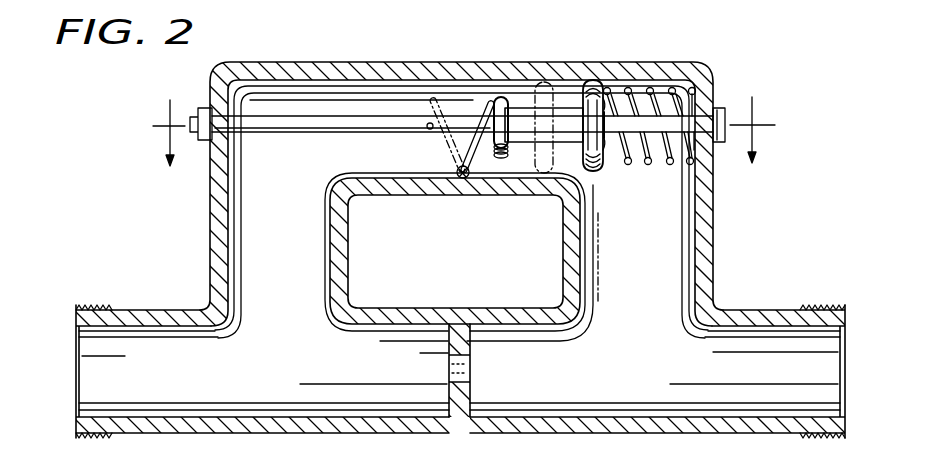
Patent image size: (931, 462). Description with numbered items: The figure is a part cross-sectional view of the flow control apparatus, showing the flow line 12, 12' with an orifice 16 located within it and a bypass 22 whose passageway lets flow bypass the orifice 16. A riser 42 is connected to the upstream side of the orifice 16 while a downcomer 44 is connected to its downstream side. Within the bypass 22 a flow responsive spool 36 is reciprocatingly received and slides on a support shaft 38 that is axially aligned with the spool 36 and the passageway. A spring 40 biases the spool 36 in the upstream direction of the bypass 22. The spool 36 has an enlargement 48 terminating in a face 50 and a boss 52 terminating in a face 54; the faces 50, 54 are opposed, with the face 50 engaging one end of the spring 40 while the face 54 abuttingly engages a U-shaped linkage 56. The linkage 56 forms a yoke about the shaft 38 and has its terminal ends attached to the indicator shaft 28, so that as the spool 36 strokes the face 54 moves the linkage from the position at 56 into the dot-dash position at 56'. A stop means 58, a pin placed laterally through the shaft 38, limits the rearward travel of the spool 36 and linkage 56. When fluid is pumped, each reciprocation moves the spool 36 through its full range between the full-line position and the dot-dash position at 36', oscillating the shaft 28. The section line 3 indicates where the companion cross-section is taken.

The flow line 12 is at (455, 231).
The flow line 12' is at (465, 231).
The orifice 16 is at (472, 345).
The bypass 22 is at (381, 52).
The indicator shaft 28 is at (464, 179).
The spool 36 is at (602, 148).
The spool dot-dash position 36' is at (560, 98).
The support shaft 38 is at (284, 133).
The spring 40 is at (656, 168).
The riser 42 is at (313, 263).
The downcomer 44 is at (605, 248).
The enlargement 48 is at (604, 104).
The face 50 is at (607, 112).
The boss 52 is at (499, 98).
The face 54 is at (500, 146).
The U-shaped linkage 56 is at (477, 98).
The linkage dot-dash position 56' is at (434, 98).
The stop means 58 is at (428, 130).
The section line 3- 3 is at (464, 121).